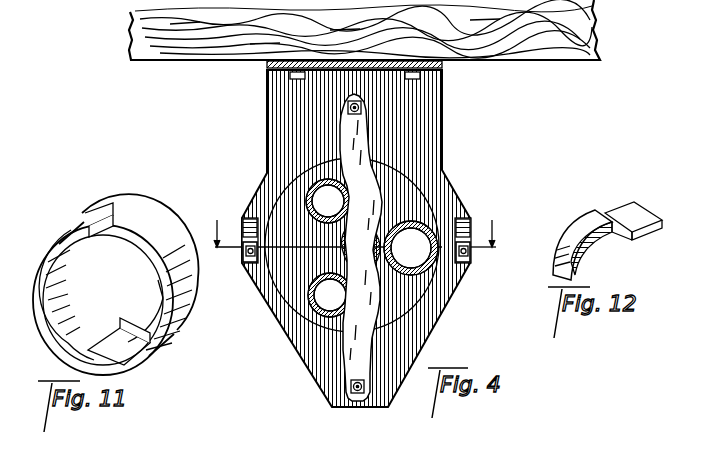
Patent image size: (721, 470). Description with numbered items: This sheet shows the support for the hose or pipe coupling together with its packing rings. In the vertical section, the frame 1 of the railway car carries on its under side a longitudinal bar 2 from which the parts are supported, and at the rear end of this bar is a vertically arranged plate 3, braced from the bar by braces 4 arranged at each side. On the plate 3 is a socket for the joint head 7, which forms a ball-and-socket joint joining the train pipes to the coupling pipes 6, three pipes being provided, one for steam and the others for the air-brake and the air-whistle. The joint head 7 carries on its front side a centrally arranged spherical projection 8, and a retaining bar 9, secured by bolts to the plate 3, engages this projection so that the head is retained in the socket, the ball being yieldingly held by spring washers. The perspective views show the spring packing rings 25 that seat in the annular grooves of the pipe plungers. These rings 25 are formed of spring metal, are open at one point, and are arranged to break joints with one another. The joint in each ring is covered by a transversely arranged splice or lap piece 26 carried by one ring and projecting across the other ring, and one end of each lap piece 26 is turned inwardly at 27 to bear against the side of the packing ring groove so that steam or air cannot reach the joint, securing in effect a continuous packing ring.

In FIG. 4, the frame 1 is at (508, 63).
In FIG. 4, the longitudinal bar 2 is at (440, 66).
In FIG. 4, the vertically arranged plate 3 is at (430, 125).
In FIG. 4, the braces 4 is at (248, 222).
In FIG. 4, the coupling pipes 6 is at (316, 192).
In FIG. 4, the joint head 7 is at (412, 200).
In FIG. 4, the spherical projection 8 is at (309, 298).
In FIG. 4, the retaining bar 9 is at (345, 150).
In FIG. 11, the spring packing rings 25 is at (158, 232).
In FIG. 12, the spring packing rings 25 is at (600, 212).
In FIG. 11, the lap pieces 26 is at (102, 356).
In FIG. 12, the lap pieces 26 is at (650, 230).
In FIG. 11, the inwardly turned end 27 is at (132, 320).
In FIG. 12, the inwardly turned end 27 is at (625, 240).